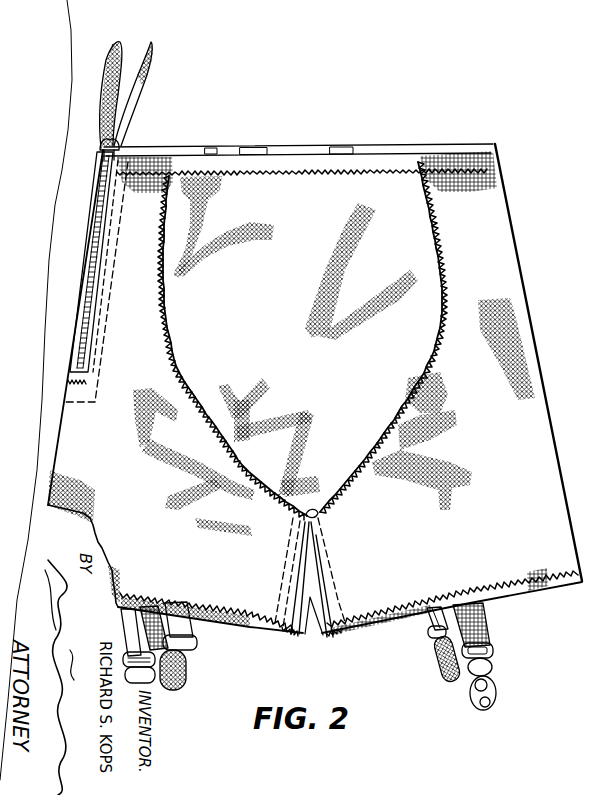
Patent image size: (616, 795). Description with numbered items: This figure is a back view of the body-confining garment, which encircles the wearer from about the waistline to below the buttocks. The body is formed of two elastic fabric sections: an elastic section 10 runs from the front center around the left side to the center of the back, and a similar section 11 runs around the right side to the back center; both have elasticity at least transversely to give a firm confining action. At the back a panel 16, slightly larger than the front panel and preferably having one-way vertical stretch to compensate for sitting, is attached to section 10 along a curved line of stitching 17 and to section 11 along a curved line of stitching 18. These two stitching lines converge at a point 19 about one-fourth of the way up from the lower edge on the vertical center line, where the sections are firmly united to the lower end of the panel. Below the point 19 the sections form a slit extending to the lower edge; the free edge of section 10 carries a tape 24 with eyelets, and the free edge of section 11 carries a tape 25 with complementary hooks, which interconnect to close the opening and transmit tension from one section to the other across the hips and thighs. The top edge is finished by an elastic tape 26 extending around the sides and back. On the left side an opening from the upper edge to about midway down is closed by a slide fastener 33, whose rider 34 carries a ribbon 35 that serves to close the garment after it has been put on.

The elastic section 10 is at (74, 445).
The elastic section 11 is at (505, 282).
The back panel 16 is at (288, 188).
The curved line of stitching 17 is at (172, 343).
The curved line of stitching 18 is at (420, 371).
The convergence point 19 is at (318, 512).
The tape 24 is at (282, 572).
The tape 25 is at (337, 569).
The elastic tape 26 is at (422, 150).
The slide fastener 33 is at (95, 227).
The rider 34 is at (102, 150).
The ribbon 35 is at (127, 96).